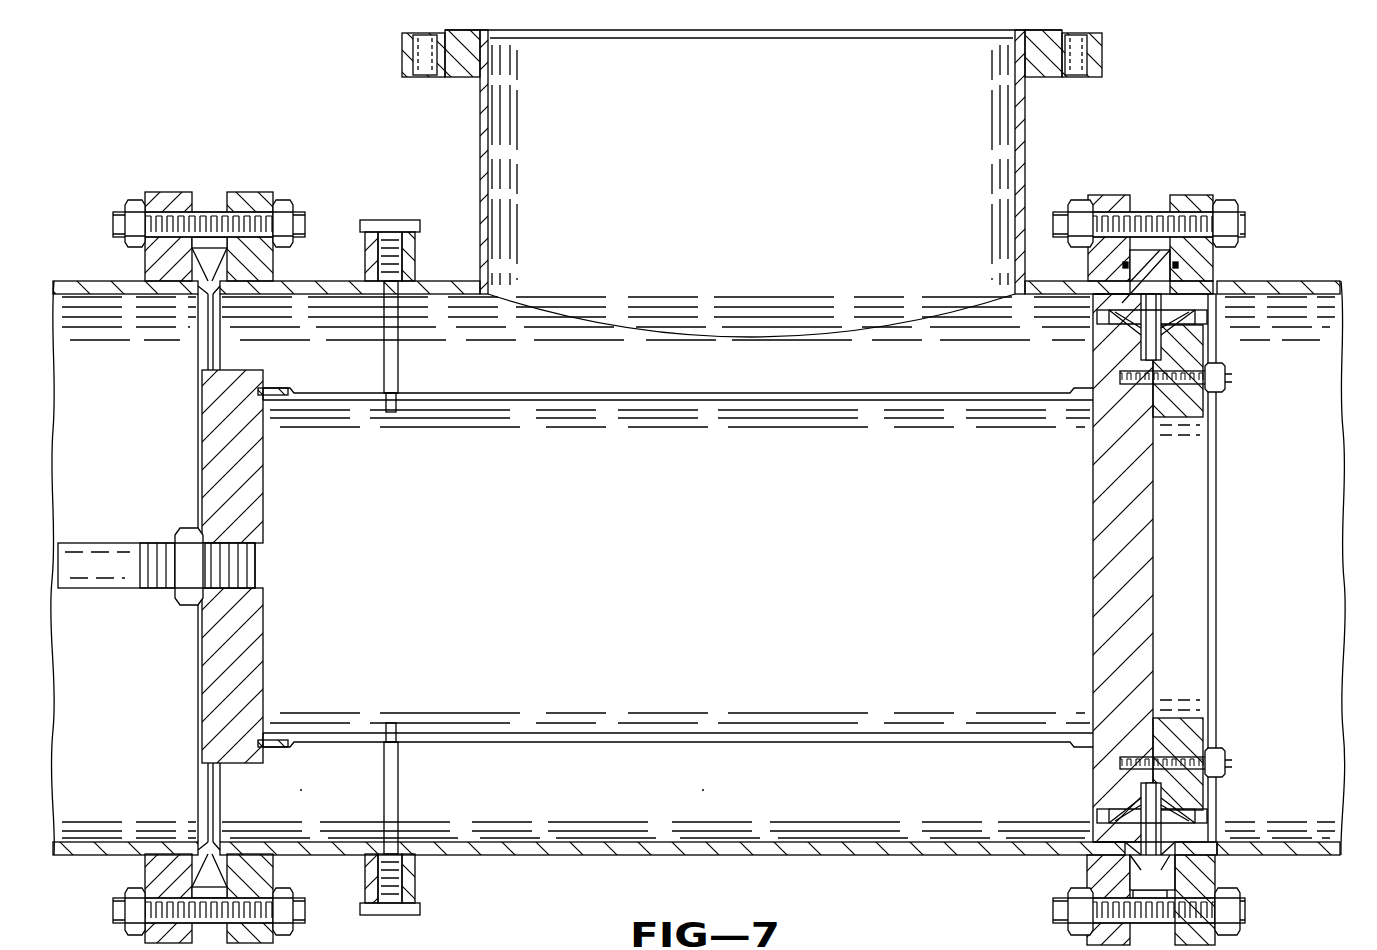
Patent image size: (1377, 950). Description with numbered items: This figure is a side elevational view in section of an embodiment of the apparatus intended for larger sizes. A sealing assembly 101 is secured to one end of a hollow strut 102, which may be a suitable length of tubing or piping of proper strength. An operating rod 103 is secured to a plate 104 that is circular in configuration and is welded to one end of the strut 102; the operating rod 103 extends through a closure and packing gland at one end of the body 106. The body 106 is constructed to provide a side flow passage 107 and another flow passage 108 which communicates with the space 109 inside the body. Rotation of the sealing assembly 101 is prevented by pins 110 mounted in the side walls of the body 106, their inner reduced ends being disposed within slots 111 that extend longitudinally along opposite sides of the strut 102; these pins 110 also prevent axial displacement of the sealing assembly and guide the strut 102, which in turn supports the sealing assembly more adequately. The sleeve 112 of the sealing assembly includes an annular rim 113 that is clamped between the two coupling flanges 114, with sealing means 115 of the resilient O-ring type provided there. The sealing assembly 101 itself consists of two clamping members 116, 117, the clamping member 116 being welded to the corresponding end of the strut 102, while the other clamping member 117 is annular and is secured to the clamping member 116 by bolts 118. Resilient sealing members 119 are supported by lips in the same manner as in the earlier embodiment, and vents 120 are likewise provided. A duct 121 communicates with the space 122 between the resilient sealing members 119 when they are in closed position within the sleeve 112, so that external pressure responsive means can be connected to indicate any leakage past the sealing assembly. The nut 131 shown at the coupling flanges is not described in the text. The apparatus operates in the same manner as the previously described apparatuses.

The sealing assembly 101 is at (1184, 490).
The hollow strut 102 is at (799, 710).
The operating rod 103 is at (100, 555).
The plate 104 is at (253, 492).
The body 106 is at (566, 859).
The side flow passage 107 is at (978, 138).
The flow passage 108 is at (1308, 550).
The space 109 is at (308, 790).
The pins 110 is at (394, 336).
The slots 111 is at (552, 398).
The sleeve 112 is at (1197, 303).
The annular rim 113 is at (1143, 258).
The coupling flanges 114 is at (1163, 157).
The sealing means 115 is at (1177, 266).
The clamping member 116 is at (1117, 348).
The clamping member 117 is at (1197, 348).
The bolts 118 is at (1185, 386).
The resilient sealing members 119 is at (1110, 315).
The vents 120 is at (1125, 322).
The duct 121 is at (1175, 865).
The space 122 is at (1130, 862).
The nut 131 is at (1200, 191).